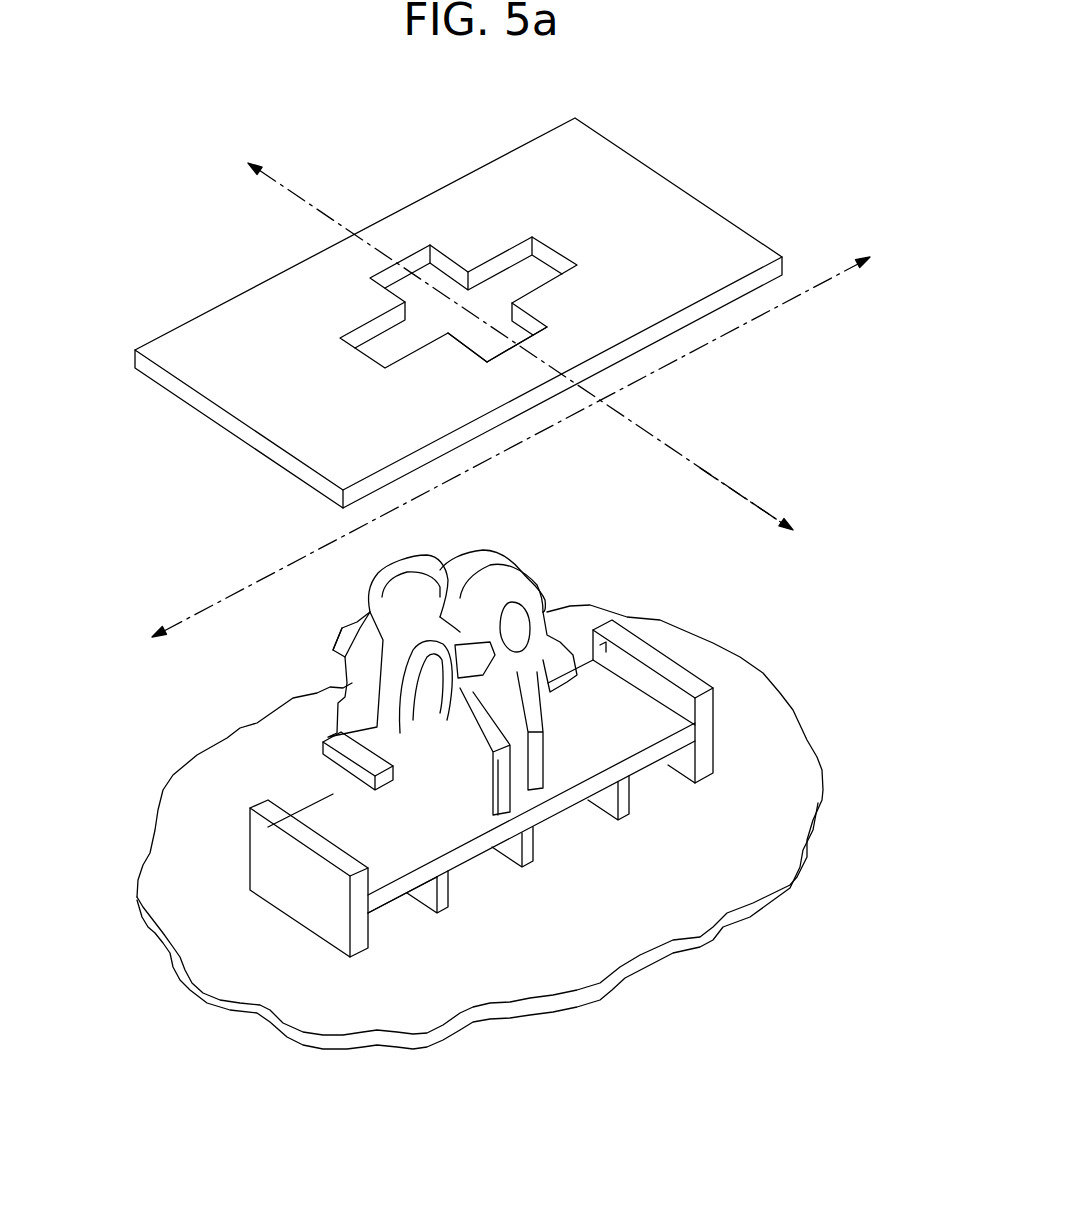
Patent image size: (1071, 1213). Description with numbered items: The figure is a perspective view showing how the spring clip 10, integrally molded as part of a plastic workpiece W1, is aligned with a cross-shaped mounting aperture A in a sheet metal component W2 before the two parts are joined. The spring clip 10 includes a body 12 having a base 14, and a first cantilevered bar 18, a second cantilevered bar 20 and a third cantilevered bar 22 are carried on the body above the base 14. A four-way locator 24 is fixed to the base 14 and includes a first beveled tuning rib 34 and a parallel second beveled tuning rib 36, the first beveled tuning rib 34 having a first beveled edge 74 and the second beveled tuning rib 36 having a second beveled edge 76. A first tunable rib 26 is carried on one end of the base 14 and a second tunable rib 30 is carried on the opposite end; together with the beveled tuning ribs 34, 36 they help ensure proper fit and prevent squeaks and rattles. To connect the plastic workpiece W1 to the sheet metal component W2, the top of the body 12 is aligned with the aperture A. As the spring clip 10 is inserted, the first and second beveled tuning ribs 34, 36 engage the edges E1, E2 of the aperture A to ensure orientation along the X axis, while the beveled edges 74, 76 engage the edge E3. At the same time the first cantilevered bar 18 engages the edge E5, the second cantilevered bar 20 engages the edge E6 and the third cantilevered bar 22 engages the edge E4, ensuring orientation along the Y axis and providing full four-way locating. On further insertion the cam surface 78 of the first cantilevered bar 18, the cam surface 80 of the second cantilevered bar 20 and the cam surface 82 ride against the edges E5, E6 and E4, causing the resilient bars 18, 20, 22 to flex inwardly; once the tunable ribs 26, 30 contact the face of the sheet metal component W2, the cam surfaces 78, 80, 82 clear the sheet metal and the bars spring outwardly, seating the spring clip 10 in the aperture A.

The spring clip 10 is at (207, 790).
The body 12 is at (538, 578).
The base 14 is at (613, 752).
The first cantilevered bar 18 is at (375, 668).
The second cantilevered bar 20 is at (543, 622).
The third cantilevered bar 22 is at (428, 570).
The 4-way locator 24 is at (450, 810).
The first tunable rib 26 is at (323, 855).
The second tunable rib 30 is at (687, 673).
The first beveled tuning rib 34 is at (477, 783).
The second beveled tuning rib 36 is at (560, 763).
The first beveled edge 74 is at (487, 755).
The second beveled edge 76 is at (540, 715).
The cam surface 78 is at (343, 748).
The cam surface 80 is at (600, 633).
The cam surface 82 is at (345, 657).
The plastic workpiece W1 is at (777, 700).
The sheet metal component W2 is at (660, 198).
The mounting aperture A is at (388, 292).
The X axis X is at (767, 313).
The Y axis Y is at (740, 490).
The edge E1 is at (467, 343).
The edge E2 is at (530, 320).
The edge E3 is at (536, 347).
The edge E4 is at (413, 267).
The edge E5 is at (367, 358).
The edge E6 is at (557, 260).